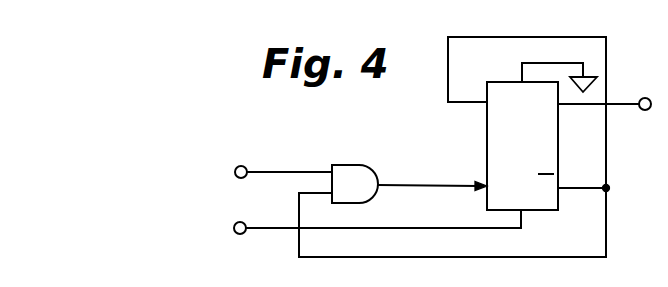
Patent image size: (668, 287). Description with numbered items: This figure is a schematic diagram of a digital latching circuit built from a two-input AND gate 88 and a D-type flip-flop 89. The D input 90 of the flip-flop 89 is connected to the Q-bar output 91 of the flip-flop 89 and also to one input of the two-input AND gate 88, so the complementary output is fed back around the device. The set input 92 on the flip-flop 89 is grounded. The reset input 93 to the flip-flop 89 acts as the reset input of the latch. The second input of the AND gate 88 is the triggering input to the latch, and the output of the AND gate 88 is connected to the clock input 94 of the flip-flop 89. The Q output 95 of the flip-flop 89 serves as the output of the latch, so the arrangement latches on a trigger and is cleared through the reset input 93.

The two-input AND gate 88 is at (363, 173).
The D-type flip-flop 89 is at (496, 135).
The D input 90 is at (486, 97).
The Q-bar output 91 is at (559, 192).
The set input 92 is at (522, 82).
The reset input 93 is at (523, 213).
The clock input 94 is at (484, 183).
The Q output 95 is at (559, 106).